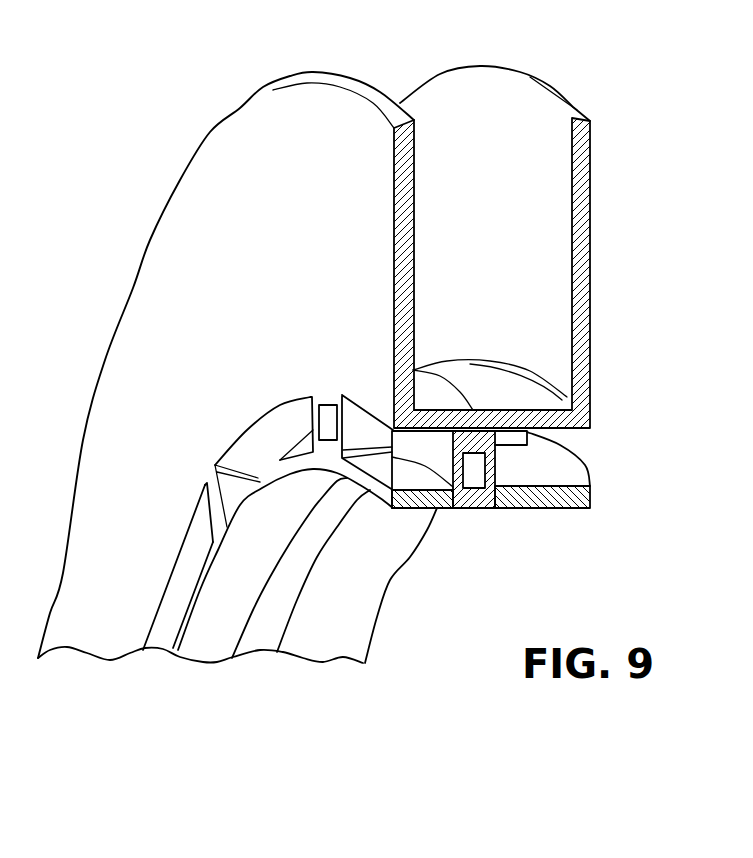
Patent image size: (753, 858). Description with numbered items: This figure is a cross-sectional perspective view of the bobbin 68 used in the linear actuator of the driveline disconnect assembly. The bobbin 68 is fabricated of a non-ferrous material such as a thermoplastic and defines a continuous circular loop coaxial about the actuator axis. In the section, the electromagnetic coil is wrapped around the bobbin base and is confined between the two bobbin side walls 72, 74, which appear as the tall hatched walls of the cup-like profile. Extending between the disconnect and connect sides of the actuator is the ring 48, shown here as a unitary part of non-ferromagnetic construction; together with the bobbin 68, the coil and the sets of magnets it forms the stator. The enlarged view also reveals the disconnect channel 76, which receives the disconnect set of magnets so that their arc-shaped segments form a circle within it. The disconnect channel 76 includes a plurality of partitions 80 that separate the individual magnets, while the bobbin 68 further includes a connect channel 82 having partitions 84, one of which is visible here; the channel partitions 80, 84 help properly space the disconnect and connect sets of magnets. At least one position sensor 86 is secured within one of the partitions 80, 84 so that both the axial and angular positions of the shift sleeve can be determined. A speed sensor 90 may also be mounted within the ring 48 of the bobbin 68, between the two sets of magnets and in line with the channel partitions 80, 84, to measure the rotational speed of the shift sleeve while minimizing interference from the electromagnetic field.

The bobbin side wall 72 is at (233, 113).
The bobbin side wall 74 is at (592, 163).
The bobbin 68 is at (592, 243).
The disconnect channel 76 is at (232, 440).
The partitions 80 is at (316, 402).
The position sensor 86 is at (327, 402).
The ring 48 is at (470, 508).
The partitions 84 is at (530, 433).
The connect channel 82 is at (580, 473).
The speed sensor 90 is at (542, 503).